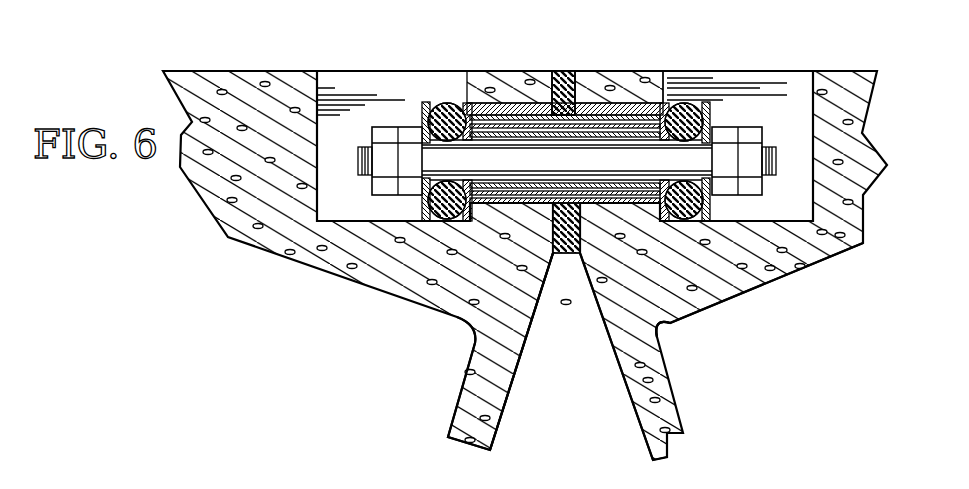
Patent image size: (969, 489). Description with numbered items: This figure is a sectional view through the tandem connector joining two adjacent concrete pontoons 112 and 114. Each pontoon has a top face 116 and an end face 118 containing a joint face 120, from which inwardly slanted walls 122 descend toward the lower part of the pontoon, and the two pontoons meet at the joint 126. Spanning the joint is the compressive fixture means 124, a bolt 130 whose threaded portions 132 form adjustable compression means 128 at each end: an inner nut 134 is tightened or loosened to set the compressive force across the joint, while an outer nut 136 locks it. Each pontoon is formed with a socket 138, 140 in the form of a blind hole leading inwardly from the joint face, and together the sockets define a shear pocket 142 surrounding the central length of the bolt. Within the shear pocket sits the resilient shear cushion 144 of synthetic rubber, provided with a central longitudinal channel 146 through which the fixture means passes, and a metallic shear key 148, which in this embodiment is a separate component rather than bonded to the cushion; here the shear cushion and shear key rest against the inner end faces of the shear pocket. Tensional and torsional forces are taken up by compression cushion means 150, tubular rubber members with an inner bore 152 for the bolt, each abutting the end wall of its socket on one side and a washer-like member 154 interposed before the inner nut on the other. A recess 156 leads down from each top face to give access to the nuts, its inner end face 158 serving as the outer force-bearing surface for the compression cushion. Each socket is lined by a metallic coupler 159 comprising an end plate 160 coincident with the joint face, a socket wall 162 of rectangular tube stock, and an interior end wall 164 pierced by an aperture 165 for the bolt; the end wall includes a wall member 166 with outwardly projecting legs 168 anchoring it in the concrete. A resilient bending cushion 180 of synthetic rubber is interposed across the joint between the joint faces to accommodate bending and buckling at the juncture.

The concrete pontoon 112 is at (250, 215).
The concrete pontoon 114 is at (835, 215).
The top face 116 is at (222, 71).
The end face 118 is at (476, 343).
The joint face 120 is at (567, 43).
The inwardly slanted wall 122 is at (537, 309).
The compressive fixture means 124 is at (420, 182).
The joint 126 is at (565, 262).
The adjustable compression means 128 is at (382, 113).
The bolt 130 is at (624, 175).
The threaded portion 132 is at (776, 200).
The inner nut 134 is at (450, 160).
The outer nut 136 is at (750, 135).
The socket 138 is at (505, 105).
The socket 140 is at (595, 105).
The shear pocket 142 is at (690, 222).
The shear cushion 144 is at (630, 100).
The central longitudinal channel 146 is at (523, 100).
The shear key 148 is at (583, 128).
The compression cushion means 150 is at (688, 105).
The inner bore 152 is at (730, 200).
The washer-like member 154 is at (425, 110).
The recess 156 is at (457, 100).
The inner end face 158 is at (528, 71).
The coupler 159 is at (640, 110).
The end plate 160 is at (565, 82).
The socket wall 162 is at (512, 125).
The interior end wall 164 is at (447, 104).
The aperture 165 is at (463, 220).
The wall member 166 is at (478, 222).
The leg 168 is at (462, 97).
The bending cushion 180 is at (670, 323).